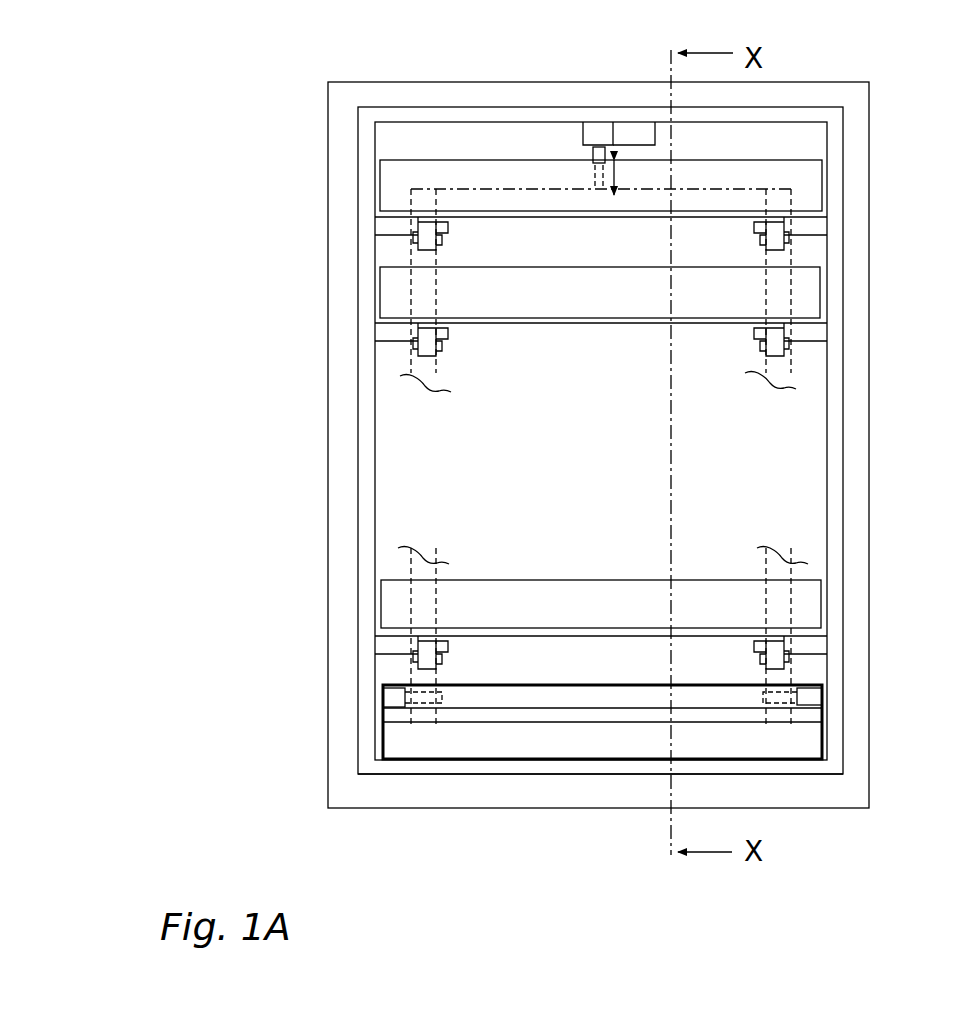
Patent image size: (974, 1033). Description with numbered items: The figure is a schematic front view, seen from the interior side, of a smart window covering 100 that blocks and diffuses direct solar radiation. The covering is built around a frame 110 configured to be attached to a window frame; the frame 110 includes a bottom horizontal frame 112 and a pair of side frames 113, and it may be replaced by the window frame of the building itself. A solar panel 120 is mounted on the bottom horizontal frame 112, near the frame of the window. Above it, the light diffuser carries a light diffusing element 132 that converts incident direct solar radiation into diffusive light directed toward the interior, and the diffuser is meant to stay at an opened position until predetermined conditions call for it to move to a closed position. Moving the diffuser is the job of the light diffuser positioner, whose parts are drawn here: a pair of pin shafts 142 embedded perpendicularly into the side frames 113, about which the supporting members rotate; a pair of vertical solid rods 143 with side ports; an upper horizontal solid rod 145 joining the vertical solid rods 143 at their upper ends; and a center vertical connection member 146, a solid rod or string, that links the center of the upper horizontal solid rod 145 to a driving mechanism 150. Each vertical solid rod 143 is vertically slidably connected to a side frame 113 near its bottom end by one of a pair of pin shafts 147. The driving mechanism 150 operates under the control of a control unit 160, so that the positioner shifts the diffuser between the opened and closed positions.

The smart window covering 100 is at (250, 120).
The frame 110 is at (348, 315).
The bottom horizontal frame 112 is at (588, 772).
The side frames 113 is at (367, 438).
The solar panel 120 is at (518, 697).
The light diffusing element 132 is at (607, 307).
The pin shafts 142 is at (388, 348).
The vertical solid rods 143 is at (438, 373).
The upper horizontal solid rod 145 is at (700, 197).
The center vertical connection member 146 is at (590, 172).
The pin shafts 147 is at (809, 695).
The driving mechanism 150 is at (580, 113).
The control unit 160 is at (628, 113).